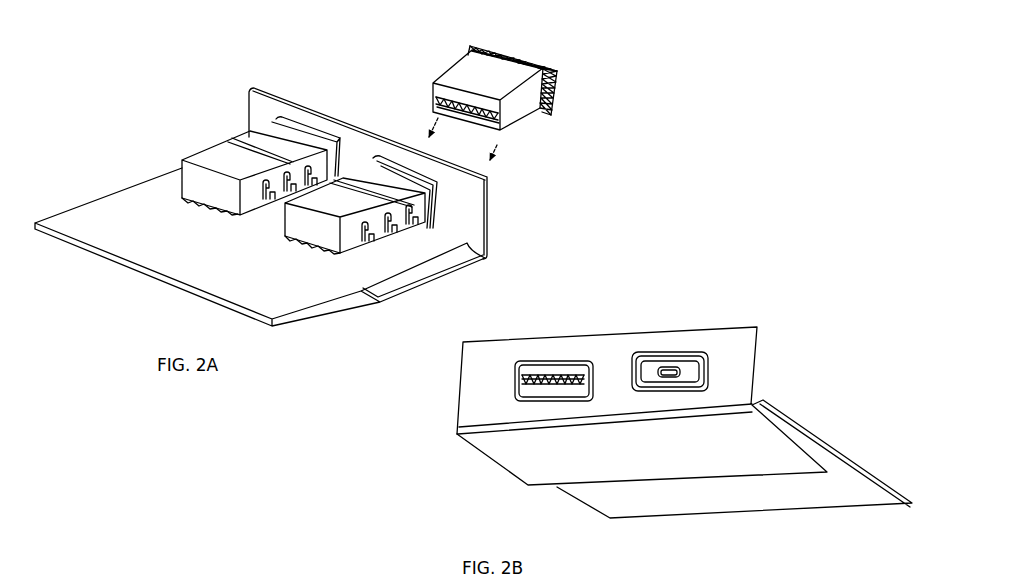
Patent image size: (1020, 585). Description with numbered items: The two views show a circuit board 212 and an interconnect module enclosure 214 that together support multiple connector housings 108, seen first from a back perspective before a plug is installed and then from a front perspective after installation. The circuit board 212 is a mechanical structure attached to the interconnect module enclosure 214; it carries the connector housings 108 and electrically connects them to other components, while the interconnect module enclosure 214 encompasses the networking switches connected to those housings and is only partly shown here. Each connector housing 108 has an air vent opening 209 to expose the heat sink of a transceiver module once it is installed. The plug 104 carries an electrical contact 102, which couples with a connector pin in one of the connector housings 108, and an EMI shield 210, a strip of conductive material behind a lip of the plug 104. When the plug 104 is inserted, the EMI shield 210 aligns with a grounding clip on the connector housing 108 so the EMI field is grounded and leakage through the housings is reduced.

In FIG. 2A, the electrical contact 102 is at (490, 113).
In FIG. 2A, the plug 104 is at (538, 103).
In FIG. 2B, the plug 104 is at (697, 358).
In FIG. 2A, the connector housing 108 is at (235, 161).
In FIG. 2B, the connector housing 108 is at (558, 366).
In FIG. 2A, the air vent opening 209 is at (288, 148).
In FIG. 2A, the electromagnetic interference (EMI) shield 210 is at (549, 103).
In FIG. 2A, the circuit board 212 is at (133, 207).
In FIG. 2B, the circuit board 212 is at (678, 505).
In FIG. 2A, the interconnect module enclosure 214 is at (475, 207).
In FIG. 2B, the interconnect module enclosure 214 is at (468, 388).